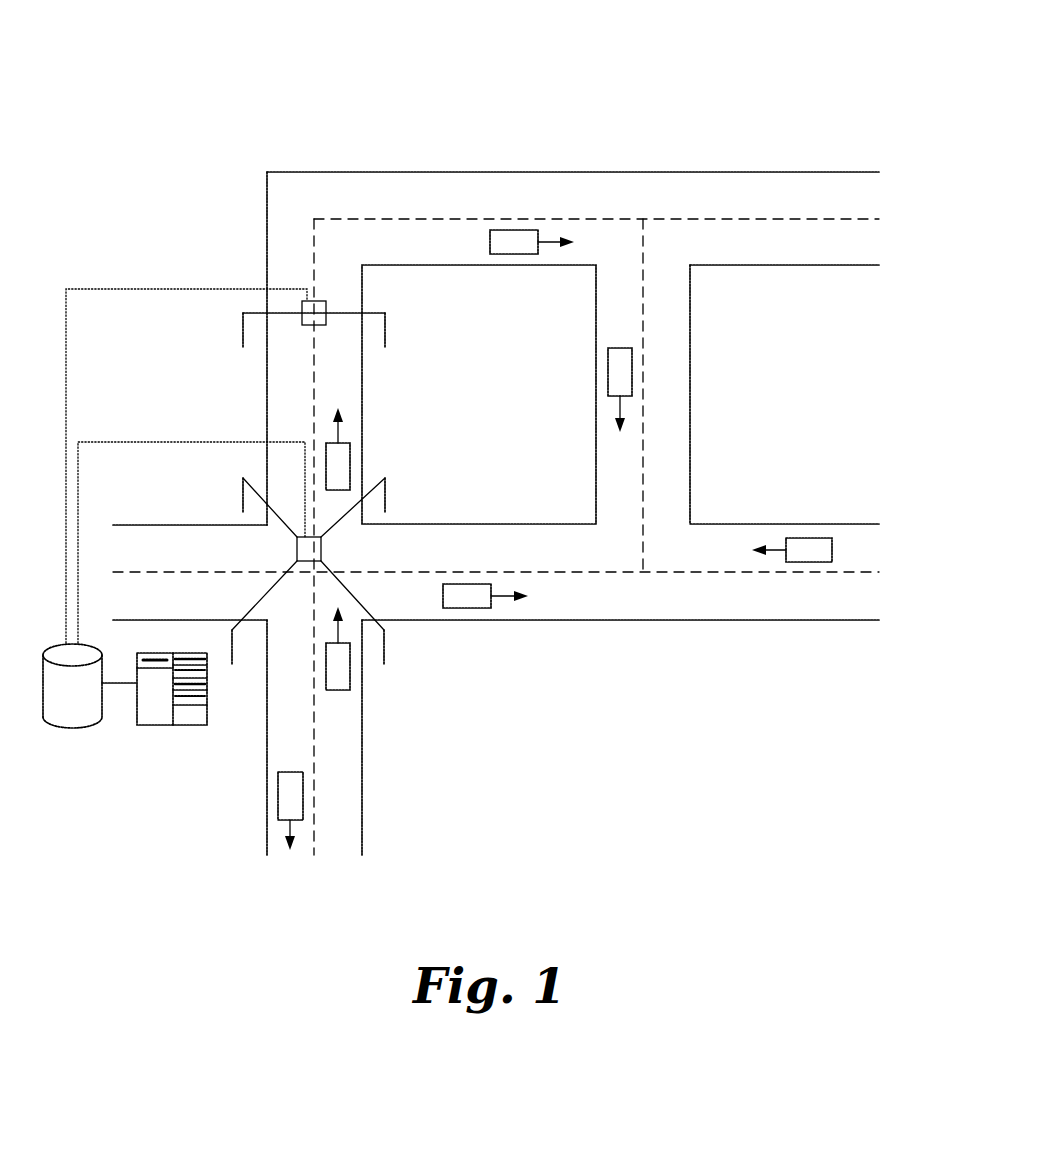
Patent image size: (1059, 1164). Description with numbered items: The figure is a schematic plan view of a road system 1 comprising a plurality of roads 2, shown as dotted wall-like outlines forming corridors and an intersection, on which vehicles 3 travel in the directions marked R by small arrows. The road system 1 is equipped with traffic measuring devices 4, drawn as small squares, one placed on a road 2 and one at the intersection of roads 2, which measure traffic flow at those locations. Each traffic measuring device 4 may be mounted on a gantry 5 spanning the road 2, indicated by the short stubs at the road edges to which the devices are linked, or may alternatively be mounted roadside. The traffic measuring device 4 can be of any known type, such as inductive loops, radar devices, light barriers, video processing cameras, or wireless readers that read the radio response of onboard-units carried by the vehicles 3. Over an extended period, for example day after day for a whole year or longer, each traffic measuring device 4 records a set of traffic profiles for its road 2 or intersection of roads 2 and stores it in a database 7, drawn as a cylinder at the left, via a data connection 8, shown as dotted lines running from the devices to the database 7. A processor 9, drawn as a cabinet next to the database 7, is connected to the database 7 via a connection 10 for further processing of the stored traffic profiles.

The road system 1 is at (626, 72).
The road 2 is at (572, 172).
The vehicle 3 is at (488, 242).
The traffic measuring device 4 is at (322, 302).
The gantry 5 is at (392, 327).
The database 7 is at (65, 728).
The data connection 8 is at (66, 432).
The processor 9 is at (192, 728).
The connection 10 is at (122, 688).